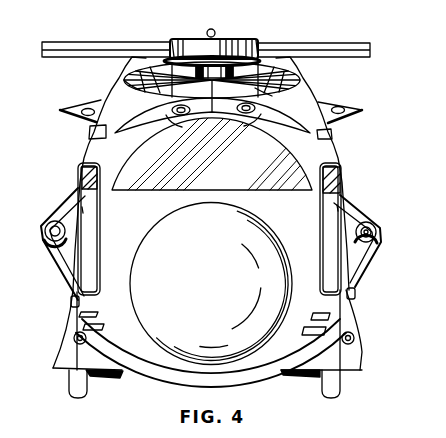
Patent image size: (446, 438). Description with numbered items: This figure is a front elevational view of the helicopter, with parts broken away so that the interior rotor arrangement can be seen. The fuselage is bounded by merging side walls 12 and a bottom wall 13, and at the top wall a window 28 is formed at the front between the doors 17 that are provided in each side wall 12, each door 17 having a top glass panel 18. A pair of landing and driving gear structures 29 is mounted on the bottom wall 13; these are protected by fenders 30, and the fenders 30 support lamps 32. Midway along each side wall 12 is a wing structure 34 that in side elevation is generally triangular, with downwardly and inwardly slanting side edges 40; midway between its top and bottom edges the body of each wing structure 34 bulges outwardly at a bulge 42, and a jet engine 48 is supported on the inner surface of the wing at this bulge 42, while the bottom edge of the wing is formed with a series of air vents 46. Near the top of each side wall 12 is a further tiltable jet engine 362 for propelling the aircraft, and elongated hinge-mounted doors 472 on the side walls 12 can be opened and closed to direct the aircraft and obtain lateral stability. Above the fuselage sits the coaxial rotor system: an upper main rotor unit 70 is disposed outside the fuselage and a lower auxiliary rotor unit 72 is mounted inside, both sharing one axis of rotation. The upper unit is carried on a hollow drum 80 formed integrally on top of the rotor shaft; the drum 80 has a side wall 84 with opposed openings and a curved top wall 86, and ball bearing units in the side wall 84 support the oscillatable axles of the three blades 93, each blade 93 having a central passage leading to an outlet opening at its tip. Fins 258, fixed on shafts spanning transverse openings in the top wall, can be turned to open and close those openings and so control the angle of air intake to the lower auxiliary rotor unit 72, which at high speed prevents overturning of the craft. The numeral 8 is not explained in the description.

The spoked wheel 8 is at (268, 70).
The side wall 12 is at (81, 163).
The bottom wall 13 is at (145, 382).
The door 17 is at (87, 219).
The top glass panel 18 is at (82, 182).
The window 28 is at (298, 187).
The landing and driving gear structure 29 is at (64, 394).
The fender 30 is at (58, 359).
The lamp 32 is at (76, 338).
The wing structure 34 is at (65, 292).
The side edge 40 is at (177, 117).
The bulge 42 is at (44, 230).
The air vent 46 is at (72, 302).
The jet engine 48 is at (45, 238).
The upper main rotor unit 70 is at (238, 28).
The lower auxiliary rotor unit 72 is at (118, 88).
The hollow drum 80 is at (259, 42).
The side wall of drum 84 is at (176, 36).
The curved top wall of drum 86 is at (207, 32).
The blade 93 is at (97, 42).
The fin 258 is at (268, 90).
The jet engine 362 is at (74, 103).
The elongated door 472 is at (89, 133).